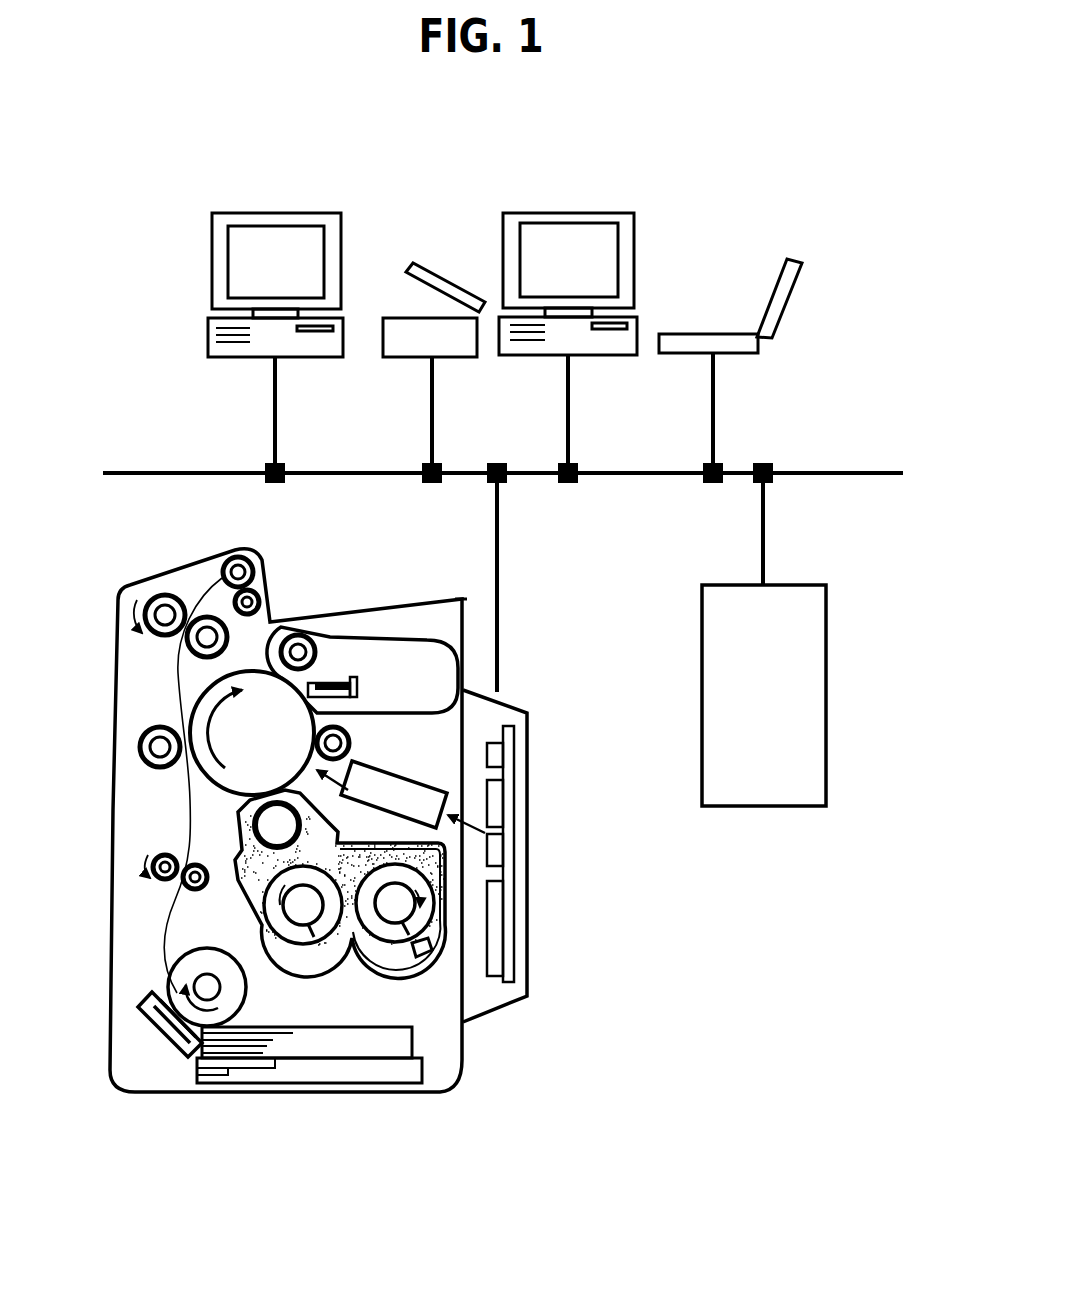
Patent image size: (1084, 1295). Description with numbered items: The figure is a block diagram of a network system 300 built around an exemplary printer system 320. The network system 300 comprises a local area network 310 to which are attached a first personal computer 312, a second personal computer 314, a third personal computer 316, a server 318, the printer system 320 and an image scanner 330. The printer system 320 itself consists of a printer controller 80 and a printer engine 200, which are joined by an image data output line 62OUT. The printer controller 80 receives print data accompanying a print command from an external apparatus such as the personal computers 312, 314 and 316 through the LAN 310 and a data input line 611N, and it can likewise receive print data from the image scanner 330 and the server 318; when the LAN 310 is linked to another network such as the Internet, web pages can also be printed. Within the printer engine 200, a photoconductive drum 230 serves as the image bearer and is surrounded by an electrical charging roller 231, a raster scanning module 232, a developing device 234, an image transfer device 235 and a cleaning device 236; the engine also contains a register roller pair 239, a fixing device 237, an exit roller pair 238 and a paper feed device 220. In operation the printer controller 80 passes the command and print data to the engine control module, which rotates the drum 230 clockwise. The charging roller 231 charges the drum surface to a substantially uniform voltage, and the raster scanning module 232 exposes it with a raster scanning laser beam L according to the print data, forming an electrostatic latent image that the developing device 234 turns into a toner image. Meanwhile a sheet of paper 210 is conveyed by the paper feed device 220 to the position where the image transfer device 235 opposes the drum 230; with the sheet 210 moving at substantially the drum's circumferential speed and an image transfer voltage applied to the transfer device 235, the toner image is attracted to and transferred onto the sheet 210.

The network system 300 is at (690, 150).
The local area network 310 is at (167, 470).
The personal computer 1 312 is at (275, 213).
The personal computer 2 314 is at (569, 213).
The personal computer 3 316 is at (700, 334).
The server 318 is at (709, 786).
The printer system 320 is at (125, 570).
The image scanner 330 is at (428, 270).
The data input line 611N is at (497, 592).
The printer controller 80 is at (512, 704).
The printer engine 200 is at (377, 1093).
The sheet of paper 210 is at (190, 797).
The paper feed device 220 is at (289, 1011).
The photoconductive drum 230 is at (205, 680).
The electrical charging roller 231 is at (352, 732).
The raster scanning module 232 is at (389, 778).
The developing device 234 is at (338, 830).
The image transfer device 235 is at (137, 753).
The cleaning device 236 is at (418, 637).
The fixing device 237 is at (222, 580).
The exit roller pair 238 is at (262, 598).
The register roller pair 239 is at (163, 852).
The image data output line 62OUT is at (452, 815).
The raster scanning laser beam L is at (332, 780).